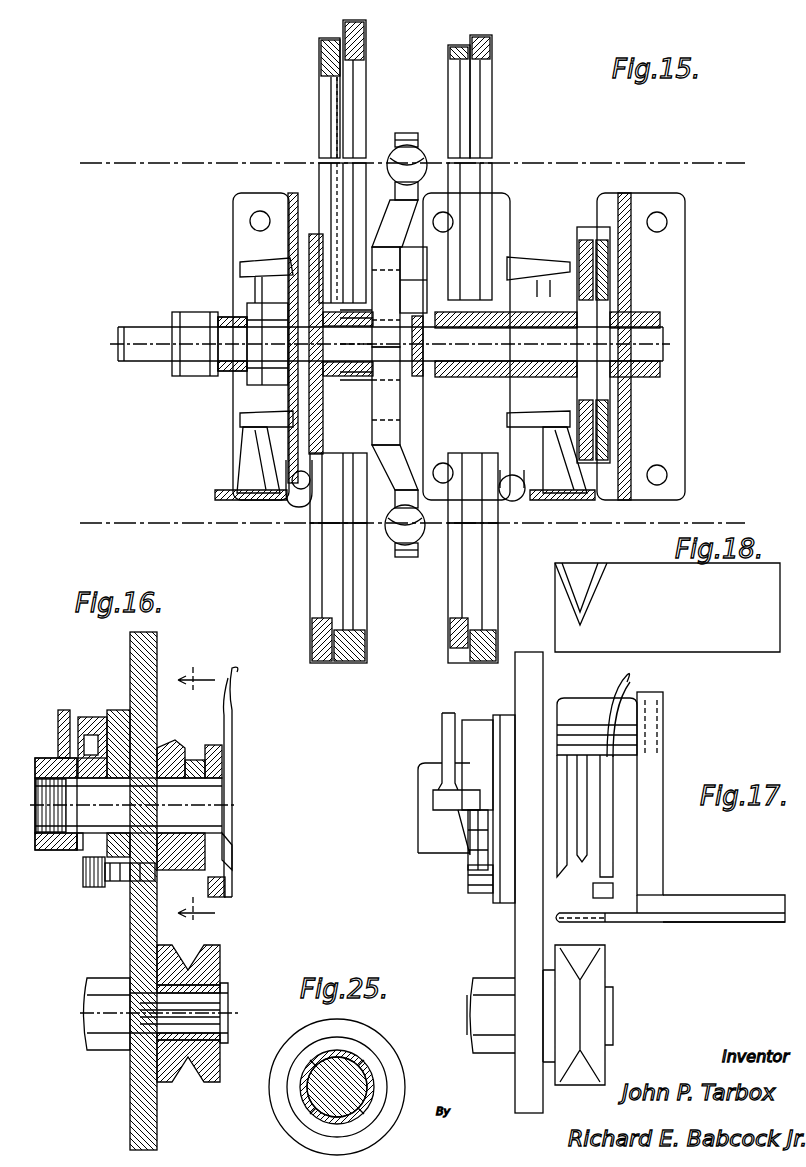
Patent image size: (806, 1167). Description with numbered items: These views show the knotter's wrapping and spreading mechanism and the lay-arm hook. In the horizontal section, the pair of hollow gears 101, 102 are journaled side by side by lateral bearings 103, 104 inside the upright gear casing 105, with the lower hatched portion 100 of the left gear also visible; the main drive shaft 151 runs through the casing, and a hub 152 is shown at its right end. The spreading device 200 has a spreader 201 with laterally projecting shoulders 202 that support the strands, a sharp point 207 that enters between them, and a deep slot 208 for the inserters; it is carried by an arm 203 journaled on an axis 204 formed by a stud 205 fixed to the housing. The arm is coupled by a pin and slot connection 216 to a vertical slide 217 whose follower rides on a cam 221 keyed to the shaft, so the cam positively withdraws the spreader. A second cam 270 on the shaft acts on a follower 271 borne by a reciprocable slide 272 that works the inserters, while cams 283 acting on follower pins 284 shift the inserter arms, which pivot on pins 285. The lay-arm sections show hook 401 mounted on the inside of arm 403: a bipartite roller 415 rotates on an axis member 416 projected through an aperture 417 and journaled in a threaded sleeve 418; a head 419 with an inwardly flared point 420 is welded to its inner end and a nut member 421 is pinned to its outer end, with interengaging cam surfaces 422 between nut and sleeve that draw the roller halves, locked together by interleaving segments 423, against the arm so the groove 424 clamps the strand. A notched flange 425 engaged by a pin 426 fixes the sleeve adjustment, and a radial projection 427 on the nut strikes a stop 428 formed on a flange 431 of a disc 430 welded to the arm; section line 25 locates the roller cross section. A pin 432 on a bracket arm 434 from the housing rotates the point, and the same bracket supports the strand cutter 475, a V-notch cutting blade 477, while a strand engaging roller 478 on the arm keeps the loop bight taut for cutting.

In FIG. 16, the section line 25- 25 is at (202, 792).
In FIG. 15, the lower wheel 100 is at (360, 648).
In FIG. 15, the hollow gear 101 is at (362, 50).
In FIG. 15, the hollow gear 102 is at (448, 55).
In FIG. 15, the lateral bearing 103 is at (319, 50).
In FIG. 15, the lateral bearing 104 is at (492, 42).
In FIG. 15, the gear casing 105 is at (290, 240).
In FIG. 17, the gear casing 105 is at (738, 910).
In FIG. 15, the main drive shaft 151 is at (150, 352).
In FIG. 15, the hub 152 is at (582, 232).
In FIG. 15, the spreading device 200 is at (401, 338).
In FIG. 15, the spreader 201 is at (419, 148).
In FIG. 15, the laterally projecting shoulders 202 is at (396, 136).
In FIG. 15, the arm 203 is at (398, 212).
In FIG. 15, the axis 204 is at (372, 344).
In FIG. 15, the stud 205 is at (352, 345).
In FIG. 15, the sharp point 207 is at (392, 170).
In FIG. 15, the deep slot 208 is at (435, 506).
In FIG. 15, the pin and slot connection 216 is at (398, 272).
In FIG. 15, the vertical slide 217 is at (420, 302).
In FIG. 15, the cam 221 is at (425, 380).
In FIG. 15, the cam 270 is at (218, 383).
In FIG. 15, the follower 271 is at (185, 312).
In FIG. 15, the slide 272 is at (232, 312).
In FIG. 15, the cam 283 is at (248, 262).
In FIG. 15, the follower pin 284 is at (250, 456).
In FIG. 15, the pin 285 is at (300, 495).
In FIG. 16, the hook 401 is at (253, 769).
In FIG. 16, the arm 403 is at (158, 634).
In FIG. 17, the arm 403 is at (515, 1086).
In FIG. 16, the bipartite roller 415 is at (222, 758).
In FIG. 25, the bipartite roller 415 is at (296, 1045).
In FIG. 17, the bipartite roller 415 is at (596, 868).
In FIG. 16, the axis member 416 is at (200, 805).
In FIG. 16, the aperture 417 is at (166, 745).
In FIG. 16, the sleeve 418 is at (95, 717).
In FIG. 16, the hook portion or head 419 is at (234, 838).
In FIG. 17, the hook portion or head 419 is at (615, 856).
In FIG. 16, the strand engaging point 420 is at (233, 688).
In FIG. 17, the strand engaging point 420 is at (632, 680).
In FIG. 16, the nut member 421 is at (52, 760).
In FIG. 17, the nut member 421 is at (418, 826).
In FIG. 16, the cam surfaces 422 is at (78, 850).
In FIG. 17, the cam surfaces 422 is at (460, 842).
In FIG. 16, the interleaving axial segments 423 is at (200, 760).
In FIG. 25, the interleaving axial segments 423 is at (362, 1078).
In FIG. 16, the roller groove 424 is at (226, 888).
In FIG. 16, the notched flange 425 is at (86, 880).
In FIG. 17, the notched flange 425 is at (475, 878).
In FIG. 16, the pin 426 is at (92, 888).
In FIG. 17, the pin 426 is at (478, 893).
In FIG. 16, the radial projection 427 is at (60, 712).
In FIG. 17, the radial projection 427 is at (446, 712).
In FIG. 17, the stop 428 is at (438, 803).
In FIG. 16, the disc 430 is at (118, 710).
In FIG. 17, the disc 430 is at (500, 903).
In FIG. 16, the flange 431 is at (90, 715).
In FIG. 17, the flange 431 is at (472, 745).
In FIG. 17, the pin 432 is at (588, 686).
In FIG. 17, the arm 434 is at (655, 786).
In FIG. 18, the strand cutter 475 is at (667, 607).
In FIG. 17, the strand cutter 475 is at (708, 922).
In FIG. 18, the V-notch cutting blade 477 is at (598, 590).
In FIG. 17, the V-notch cutting blade 477 is at (585, 922).
In FIG. 16, the strand engaging roller 478 is at (208, 1068).
In FIG. 17, the strand engaging roller 478 is at (605, 983).